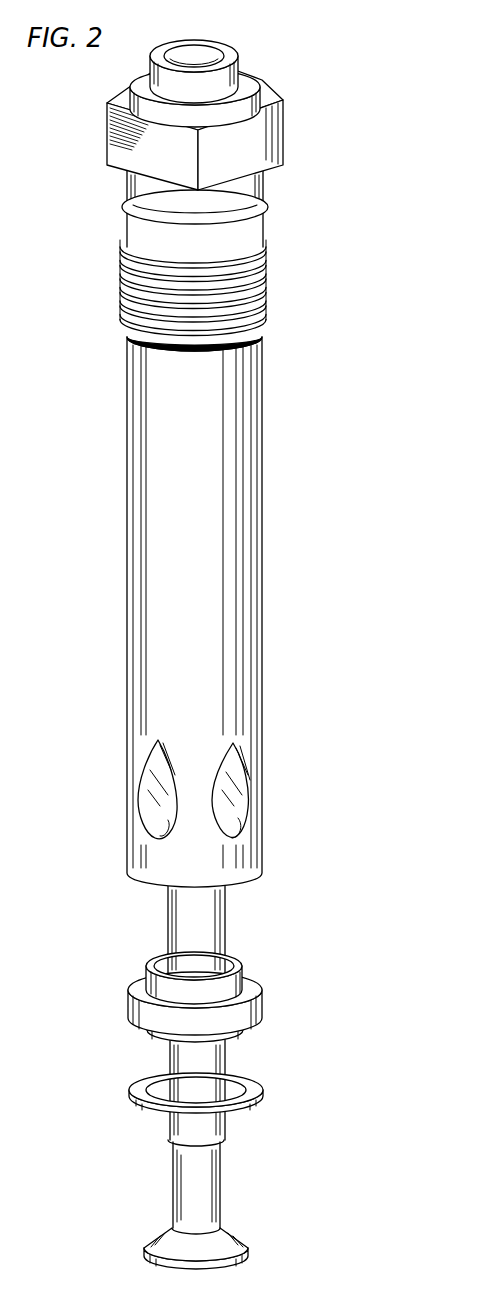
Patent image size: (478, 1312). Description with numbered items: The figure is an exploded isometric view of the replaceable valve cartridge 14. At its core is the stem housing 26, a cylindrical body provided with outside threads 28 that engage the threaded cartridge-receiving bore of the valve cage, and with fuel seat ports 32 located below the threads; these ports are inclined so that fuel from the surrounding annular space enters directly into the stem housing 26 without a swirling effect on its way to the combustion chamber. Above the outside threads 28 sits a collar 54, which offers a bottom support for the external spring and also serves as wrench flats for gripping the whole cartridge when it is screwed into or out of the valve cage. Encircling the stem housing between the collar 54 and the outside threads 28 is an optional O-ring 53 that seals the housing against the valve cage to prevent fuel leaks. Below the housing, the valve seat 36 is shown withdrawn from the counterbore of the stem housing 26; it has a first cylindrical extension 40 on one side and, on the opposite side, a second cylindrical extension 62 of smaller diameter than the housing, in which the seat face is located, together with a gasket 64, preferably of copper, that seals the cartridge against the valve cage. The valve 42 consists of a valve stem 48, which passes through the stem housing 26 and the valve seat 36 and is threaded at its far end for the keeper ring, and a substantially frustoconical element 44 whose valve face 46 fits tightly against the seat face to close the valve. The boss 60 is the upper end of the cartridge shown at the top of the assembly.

The valve cartridge 14 is at (293, 513).
The stem housing 26 is at (263, 410).
The outside threads 28 is at (267, 291).
The fuel seat ports 32 is at (243, 792).
The valve seat 36 is at (263, 1007).
The first cylindrical extension 40 is at (247, 970).
The valve 42 is at (246, 1211).
The frustoconical element 44 is at (237, 1263).
The valve face 46 is at (247, 1232).
The valve stem 48 is at (222, 933).
The O-ring 53 is at (270, 200).
The collar 54 is at (278, 142).
The boss 60 is at (237, 57).
The second cylindrical extension 62 is at (246, 1031).
The gasket 64 is at (261, 1094).